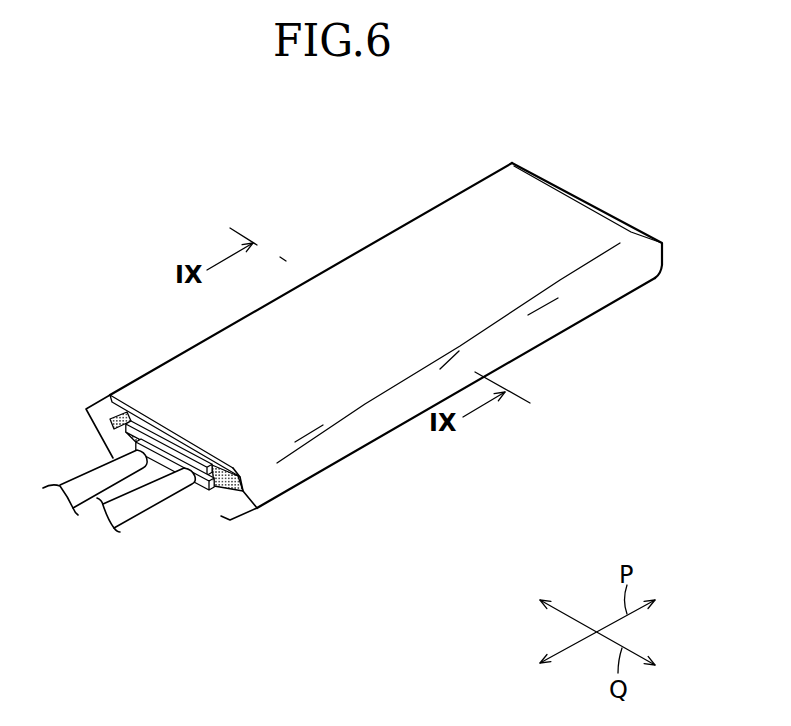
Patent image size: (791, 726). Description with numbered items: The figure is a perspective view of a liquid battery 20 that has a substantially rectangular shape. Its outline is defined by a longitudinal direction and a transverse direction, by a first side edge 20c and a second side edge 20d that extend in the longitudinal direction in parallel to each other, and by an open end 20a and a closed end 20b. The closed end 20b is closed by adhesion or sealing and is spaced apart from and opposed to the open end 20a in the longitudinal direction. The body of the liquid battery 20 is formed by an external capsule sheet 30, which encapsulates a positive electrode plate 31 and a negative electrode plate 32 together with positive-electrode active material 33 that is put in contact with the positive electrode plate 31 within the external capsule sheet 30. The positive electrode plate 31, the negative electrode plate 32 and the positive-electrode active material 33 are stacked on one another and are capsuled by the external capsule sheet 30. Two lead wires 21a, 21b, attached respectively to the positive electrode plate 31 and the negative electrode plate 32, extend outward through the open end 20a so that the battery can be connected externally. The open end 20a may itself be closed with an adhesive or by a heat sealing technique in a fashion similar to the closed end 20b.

The liquid battery 20 is at (374, 325).
The open end 20a is at (171, 460).
The closed end 20b is at (605, 206).
The first side edge 20c is at (390, 231).
The second side edge 20d is at (383, 435).
The lead wire 21a is at (84, 484).
The lead wire 21b is at (139, 501).
The external capsule sheet 30 is at (546, 328).
The positive electrode plate 31 is at (198, 460).
The negative electrode plate 32 is at (193, 493).
The positive-electrode active material 33 is at (125, 413).